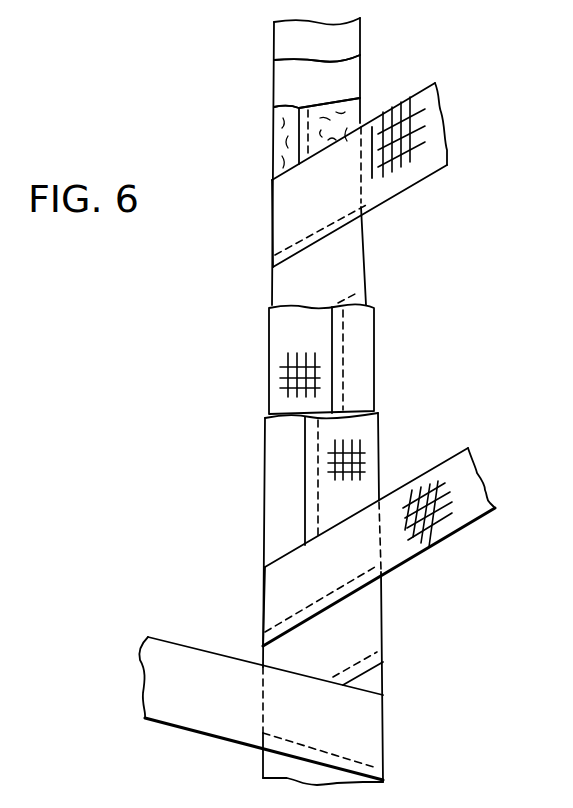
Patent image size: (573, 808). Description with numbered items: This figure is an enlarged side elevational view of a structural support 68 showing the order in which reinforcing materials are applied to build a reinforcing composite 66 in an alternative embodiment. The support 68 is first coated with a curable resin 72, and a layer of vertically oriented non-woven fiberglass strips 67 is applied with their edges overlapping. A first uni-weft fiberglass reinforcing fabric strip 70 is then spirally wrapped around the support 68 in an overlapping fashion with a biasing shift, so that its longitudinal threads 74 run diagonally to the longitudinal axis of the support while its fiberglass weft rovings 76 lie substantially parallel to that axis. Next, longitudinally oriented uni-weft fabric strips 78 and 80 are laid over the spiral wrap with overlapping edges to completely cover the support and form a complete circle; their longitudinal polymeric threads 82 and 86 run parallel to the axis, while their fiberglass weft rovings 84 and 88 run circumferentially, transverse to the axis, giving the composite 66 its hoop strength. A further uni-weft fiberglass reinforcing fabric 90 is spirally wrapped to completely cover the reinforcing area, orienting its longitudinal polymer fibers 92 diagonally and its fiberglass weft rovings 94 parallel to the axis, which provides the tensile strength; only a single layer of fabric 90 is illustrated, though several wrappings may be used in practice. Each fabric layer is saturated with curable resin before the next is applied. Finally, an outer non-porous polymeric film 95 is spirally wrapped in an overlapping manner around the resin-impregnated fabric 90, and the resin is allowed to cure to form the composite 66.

The reinforcing composite 66 is at (344, 399).
The vertically oriented non-woven fiberglass strips 67 is at (277, 153).
The structural support 68 is at (365, 35).
The uni-weft fiberglass reinforcing fabric strip 70 is at (383, 175).
The curable resin 72 is at (297, 88).
The longitudinal threads 74 is at (425, 126).
The fiberglass weft rovings 76 is at (372, 178).
The uni-weft fabric strip 78 is at (321, 353).
The uni-weft fabric strip 80 is at (348, 596).
The longitudinal polymeric threads 82 is at (288, 357).
The fiberglass weft rovings 84 is at (288, 387).
The longitudinal polymeric threads 86 is at (335, 487).
The fiberglass weft rovings 88 is at (362, 453).
The uni-weft fiberglass reinforcing fabric 90 is at (399, 566).
The longitudinal polymer fibers 92 is at (447, 518).
The fiberglass weft rovings 94 is at (437, 481).
The non-porous polymeric film 95 is at (180, 636).